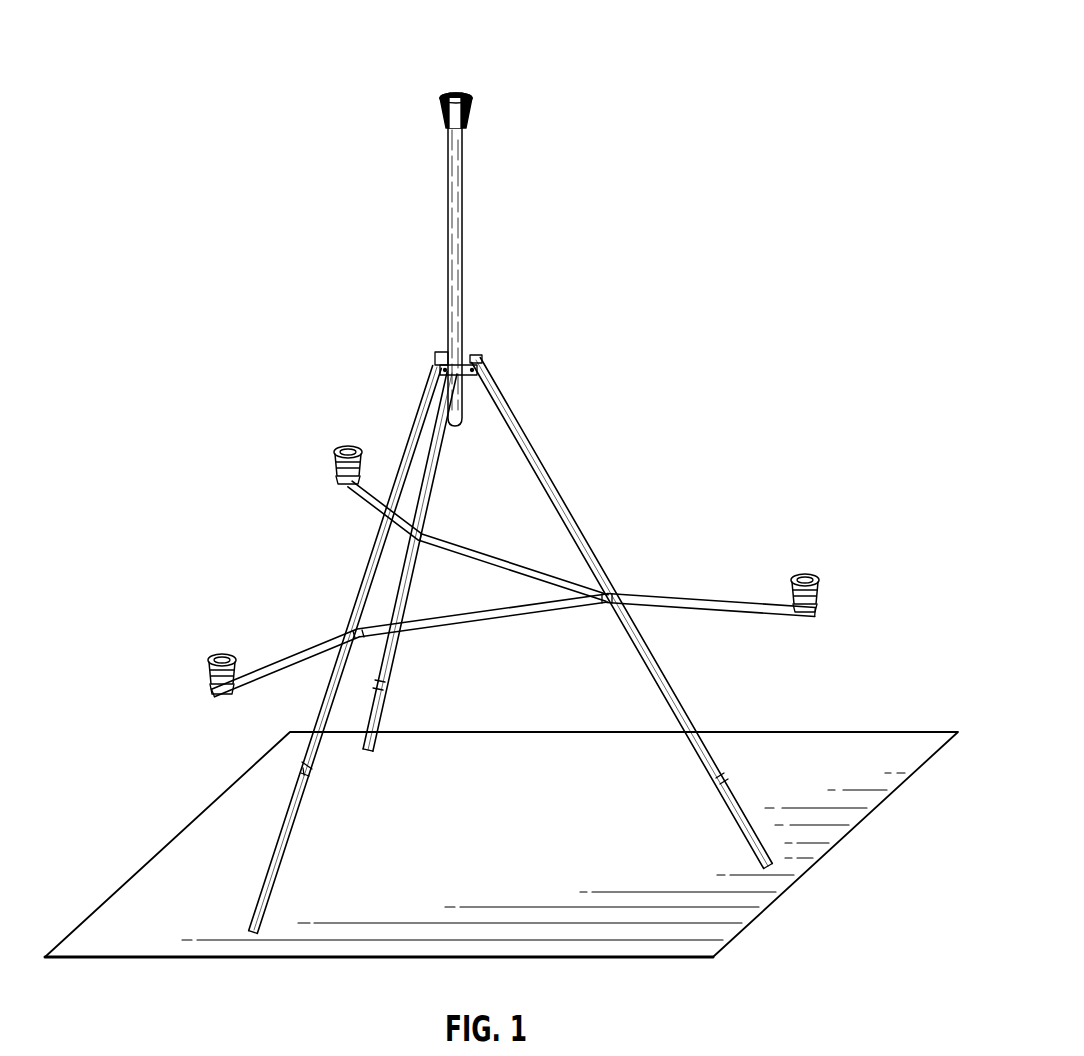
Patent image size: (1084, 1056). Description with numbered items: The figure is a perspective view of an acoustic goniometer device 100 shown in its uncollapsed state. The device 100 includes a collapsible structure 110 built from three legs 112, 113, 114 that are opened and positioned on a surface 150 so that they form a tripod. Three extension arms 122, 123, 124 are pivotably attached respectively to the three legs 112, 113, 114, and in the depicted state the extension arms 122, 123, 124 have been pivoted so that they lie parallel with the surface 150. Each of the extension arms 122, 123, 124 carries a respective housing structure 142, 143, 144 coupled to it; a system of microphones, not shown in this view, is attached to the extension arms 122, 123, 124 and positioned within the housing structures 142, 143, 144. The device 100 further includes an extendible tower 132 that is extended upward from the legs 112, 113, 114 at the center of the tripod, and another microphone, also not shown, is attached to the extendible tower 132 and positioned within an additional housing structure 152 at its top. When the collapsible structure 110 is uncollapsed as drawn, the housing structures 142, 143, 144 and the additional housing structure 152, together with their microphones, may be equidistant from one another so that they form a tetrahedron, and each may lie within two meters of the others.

The acoustic goniometer device 100 is at (320, 64).
The collapsible structure 110 is at (391, 428).
The leg 112 is at (285, 838).
The leg 113 is at (395, 645).
The leg 114 is at (634, 654).
The extension arm 122 is at (310, 648).
The extension arm 123 is at (360, 504).
The extension arm 124 is at (693, 600).
The extendible tower 132 is at (448, 222).
The housing structure 142 is at (210, 656).
The housing structure 143 is at (334, 448).
The housing structure 144 is at (815, 578).
The surface 150 is at (804, 758).
The housing structure 152 is at (463, 97).